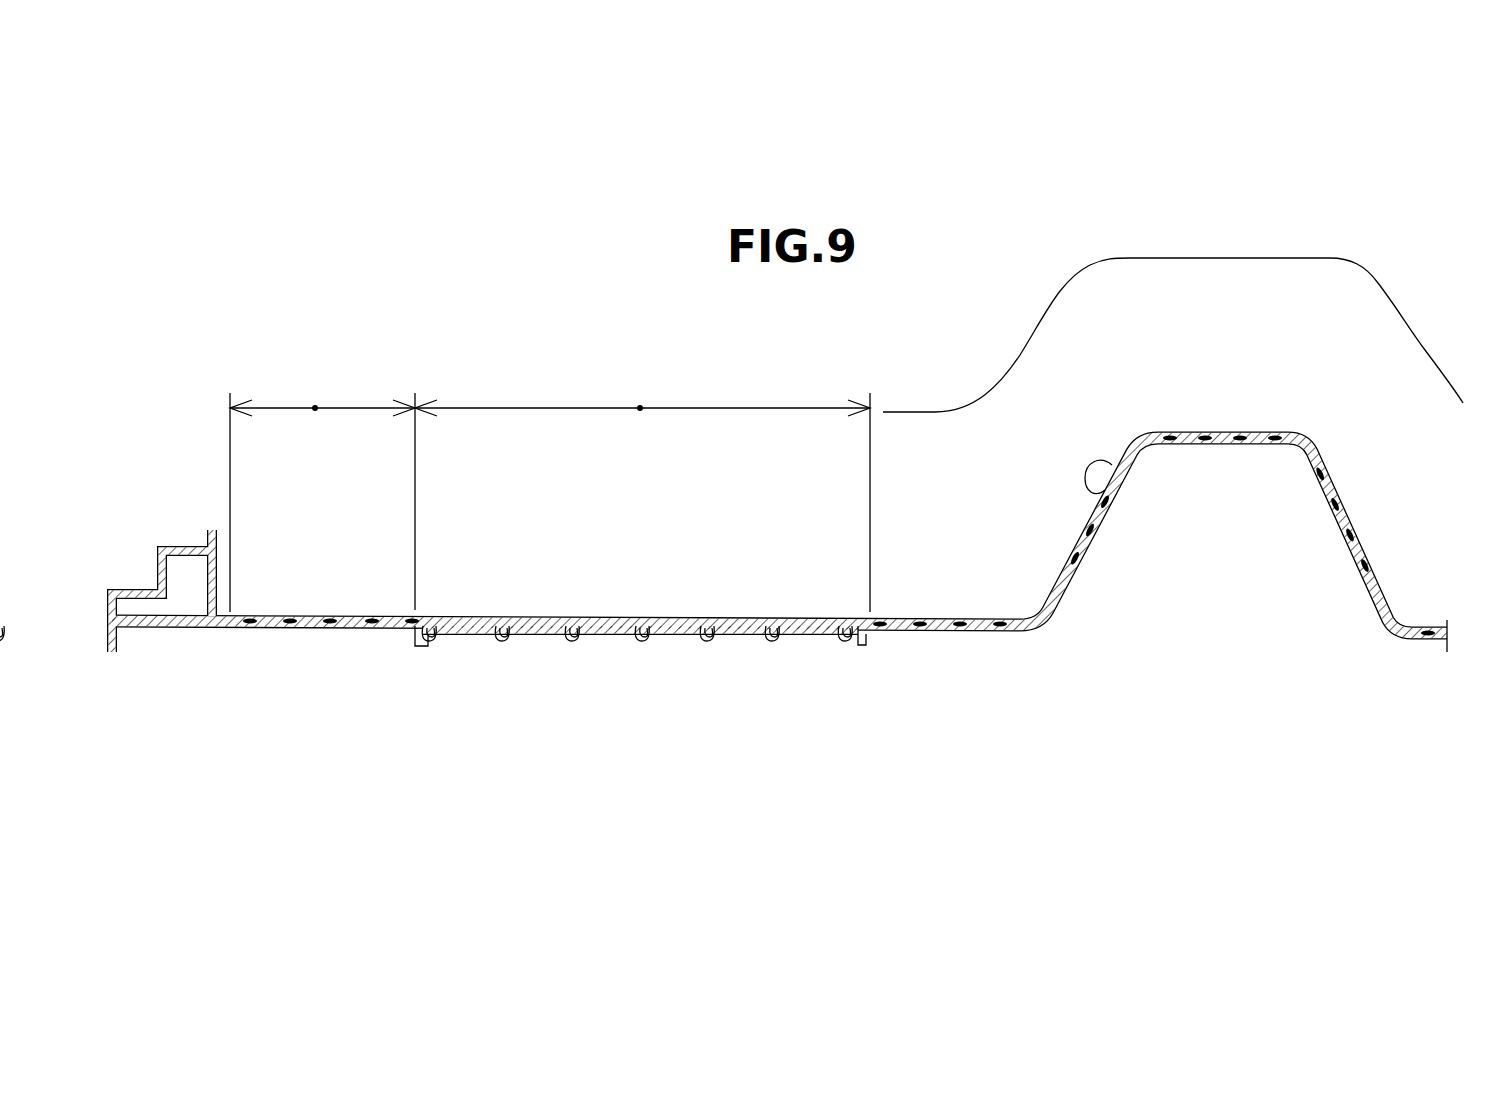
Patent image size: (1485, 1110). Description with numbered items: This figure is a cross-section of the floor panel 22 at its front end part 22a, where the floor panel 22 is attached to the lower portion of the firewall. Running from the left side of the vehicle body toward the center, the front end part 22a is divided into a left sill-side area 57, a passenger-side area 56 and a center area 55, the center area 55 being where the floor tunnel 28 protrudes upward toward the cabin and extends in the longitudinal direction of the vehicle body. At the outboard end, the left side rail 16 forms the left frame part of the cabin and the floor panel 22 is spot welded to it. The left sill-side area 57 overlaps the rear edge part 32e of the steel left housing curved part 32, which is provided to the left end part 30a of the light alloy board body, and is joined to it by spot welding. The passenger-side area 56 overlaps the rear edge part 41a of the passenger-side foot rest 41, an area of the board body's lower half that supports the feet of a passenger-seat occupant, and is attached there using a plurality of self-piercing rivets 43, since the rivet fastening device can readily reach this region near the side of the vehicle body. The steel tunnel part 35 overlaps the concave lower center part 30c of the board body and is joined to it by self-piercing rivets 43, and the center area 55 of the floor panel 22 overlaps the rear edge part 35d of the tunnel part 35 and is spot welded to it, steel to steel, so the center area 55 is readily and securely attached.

The left side rail 16 is at (172, 546).
The floor panel 22 is at (1240, 430).
The front end part 22a is at (980, 617).
The floor tunnel 28 is at (1172, 430).
The left end part 30a is at (418, 644).
The lower center part 30c is at (860, 645).
The left housing curved part 32 is at (266, 632).
The rear edge part 32e is at (340, 630).
The tunnel part 35 is at (1325, 480).
The rear edge part 35d is at (1105, 495).
The passenger-side foot rest 41 is at (740, 636).
The rear edge part 41a is at (600, 634).
The self-piercing rivets 43 is at (432, 612).
The center area 55 is at (1205, 258).
The passenger-side area 56 is at (640, 406).
The left sill-side area 57 is at (315, 406).